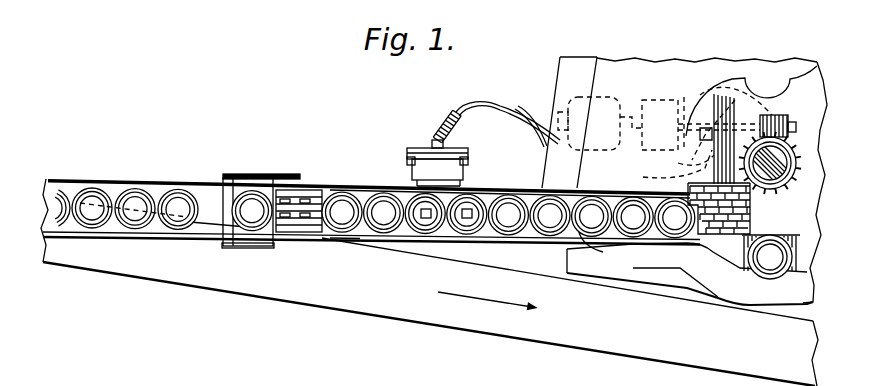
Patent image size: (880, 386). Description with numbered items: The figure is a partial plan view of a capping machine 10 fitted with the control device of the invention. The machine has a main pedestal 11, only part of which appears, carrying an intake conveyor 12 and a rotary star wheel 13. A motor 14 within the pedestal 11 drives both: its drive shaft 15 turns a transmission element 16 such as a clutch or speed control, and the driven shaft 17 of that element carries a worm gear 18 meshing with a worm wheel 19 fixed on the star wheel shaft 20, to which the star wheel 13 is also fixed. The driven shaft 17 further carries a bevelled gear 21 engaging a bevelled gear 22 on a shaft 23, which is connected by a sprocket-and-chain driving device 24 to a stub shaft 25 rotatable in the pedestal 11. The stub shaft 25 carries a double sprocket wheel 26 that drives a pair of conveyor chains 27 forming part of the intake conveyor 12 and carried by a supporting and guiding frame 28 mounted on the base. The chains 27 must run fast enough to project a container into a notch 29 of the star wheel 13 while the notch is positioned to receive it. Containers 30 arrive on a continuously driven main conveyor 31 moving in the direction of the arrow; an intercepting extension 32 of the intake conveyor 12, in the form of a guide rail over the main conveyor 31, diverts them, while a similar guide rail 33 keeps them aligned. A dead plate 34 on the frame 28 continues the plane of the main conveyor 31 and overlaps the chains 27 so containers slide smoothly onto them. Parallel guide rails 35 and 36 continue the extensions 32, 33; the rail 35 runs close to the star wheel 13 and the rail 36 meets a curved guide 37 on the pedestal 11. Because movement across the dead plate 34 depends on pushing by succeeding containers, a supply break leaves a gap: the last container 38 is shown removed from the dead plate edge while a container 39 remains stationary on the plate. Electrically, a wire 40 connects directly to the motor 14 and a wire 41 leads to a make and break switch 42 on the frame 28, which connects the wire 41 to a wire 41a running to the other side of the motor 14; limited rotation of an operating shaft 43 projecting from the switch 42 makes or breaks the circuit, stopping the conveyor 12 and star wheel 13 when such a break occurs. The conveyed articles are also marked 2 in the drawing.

The workpiece / article on conveyor 2 is at (392, 222).
The capping machine 10 is at (749, 57).
The pedestal 11 is at (672, 60).
The intake conveyor 12 is at (515, 172).
The rotary star wheel 13 is at (821, 92).
The motor 14 is at (580, 95).
The drive shaft 15 is at (632, 96).
The transmission element 16 is at (658, 98).
The driven shaft 17 is at (690, 98).
The worm gear 18 is at (797, 98).
The worm wheel 19 is at (778, 184).
The star wheel shaft 20 is at (797, 150).
The bevelled gear 21 is at (722, 95).
The bevelled gear 22 is at (683, 163).
The shaft 23 is at (663, 169).
The sprocket and chain driving device 24 is at (728, 125).
The stub shaft 25 is at (730, 238).
The double sprocket wheel 26 is at (748, 212).
The conveyor chains 27 is at (298, 222).
The supporting and guiding frame 28 is at (312, 233).
The notch 29 is at (758, 96).
The containers 30 is at (172, 193).
The main conveyor 31 is at (213, 278).
The intercepting extension 32 is at (100, 235).
The guide rail 33 is at (74, 181).
The dead plate 34 is at (205, 195).
The guide rail 35 is at (348, 188).
The guide rail 36 is at (348, 243).
The guide 37 is at (722, 288).
The last container 38 is at (330, 190).
The container 39 is at (250, 188).
The wire 40 is at (521, 111).
The wire 41 is at (456, 112).
The wire 41a is at (493, 107).
The make and break switch 42 is at (421, 162).
The operating shaft 43 is at (474, 192).